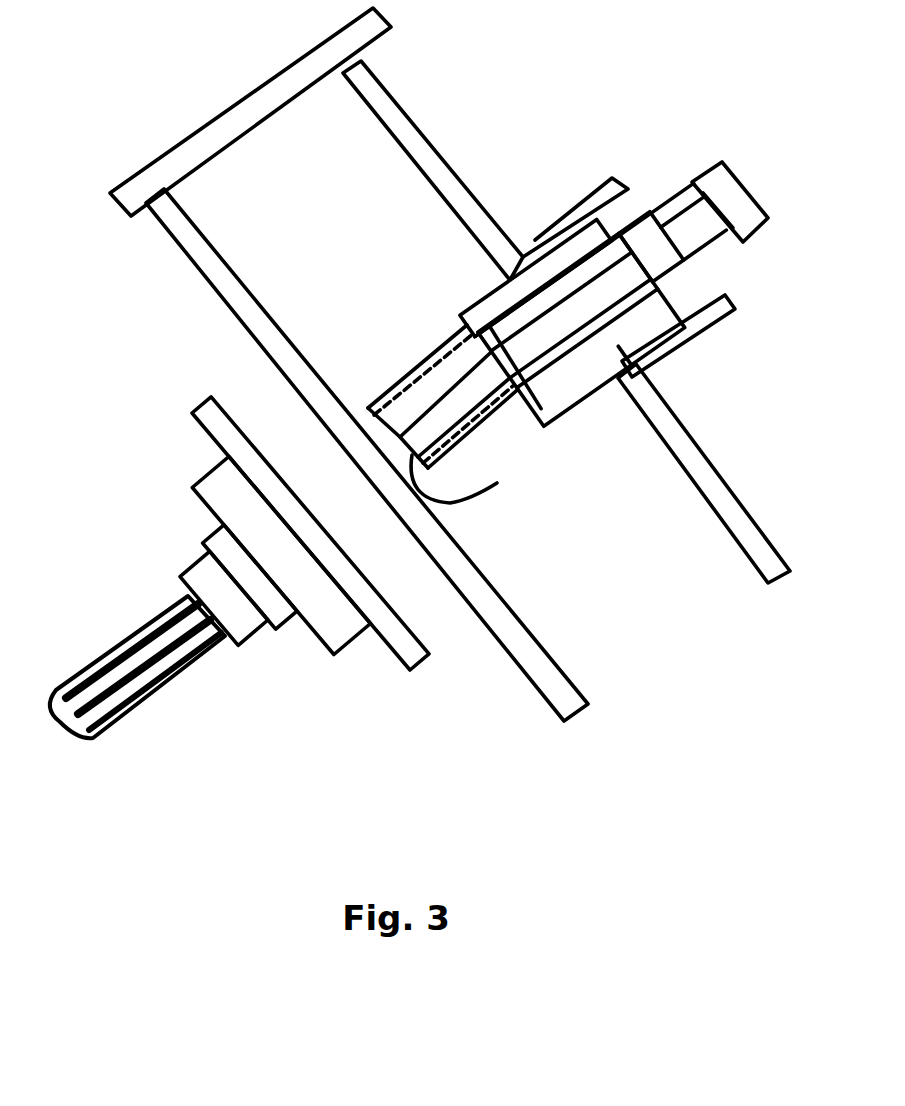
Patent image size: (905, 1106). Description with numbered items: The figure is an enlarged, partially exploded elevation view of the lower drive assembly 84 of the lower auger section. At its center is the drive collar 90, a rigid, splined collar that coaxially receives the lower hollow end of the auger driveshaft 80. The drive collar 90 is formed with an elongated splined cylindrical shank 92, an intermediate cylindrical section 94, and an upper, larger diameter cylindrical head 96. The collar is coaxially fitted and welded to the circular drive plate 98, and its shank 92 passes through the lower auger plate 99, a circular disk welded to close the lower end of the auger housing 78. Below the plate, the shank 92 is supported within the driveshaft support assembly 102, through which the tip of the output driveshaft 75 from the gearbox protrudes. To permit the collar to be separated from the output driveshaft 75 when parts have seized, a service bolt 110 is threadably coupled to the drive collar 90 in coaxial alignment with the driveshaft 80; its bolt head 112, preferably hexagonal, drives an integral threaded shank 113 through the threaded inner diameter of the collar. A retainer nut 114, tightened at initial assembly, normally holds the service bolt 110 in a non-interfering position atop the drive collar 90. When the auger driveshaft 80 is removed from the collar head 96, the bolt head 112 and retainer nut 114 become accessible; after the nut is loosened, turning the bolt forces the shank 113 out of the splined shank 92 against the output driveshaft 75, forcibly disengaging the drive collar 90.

The output driveshaft 75 is at (167, 680).
The auger housing 78 is at (252, 117).
The auger driveshaft 80 is at (610, 177).
The lower drive assembly 84 is at (483, 113).
The drive collar 90 is at (564, 423).
The splined cylindrical shank 92 is at (408, 383).
The intermediate cylindrical section 94 is at (483, 313).
The cylindrical head 96 is at (642, 340).
The drive plate 98 is at (775, 566).
The lower auger plate 99 is at (565, 703).
The driveshaft support assembly 102 is at (204, 464).
The service bolt 110 is at (722, 160).
The bolt head 112 is at (737, 197).
The threaded shank 113 is at (483, 479).
The retainer nut 114 is at (665, 255).